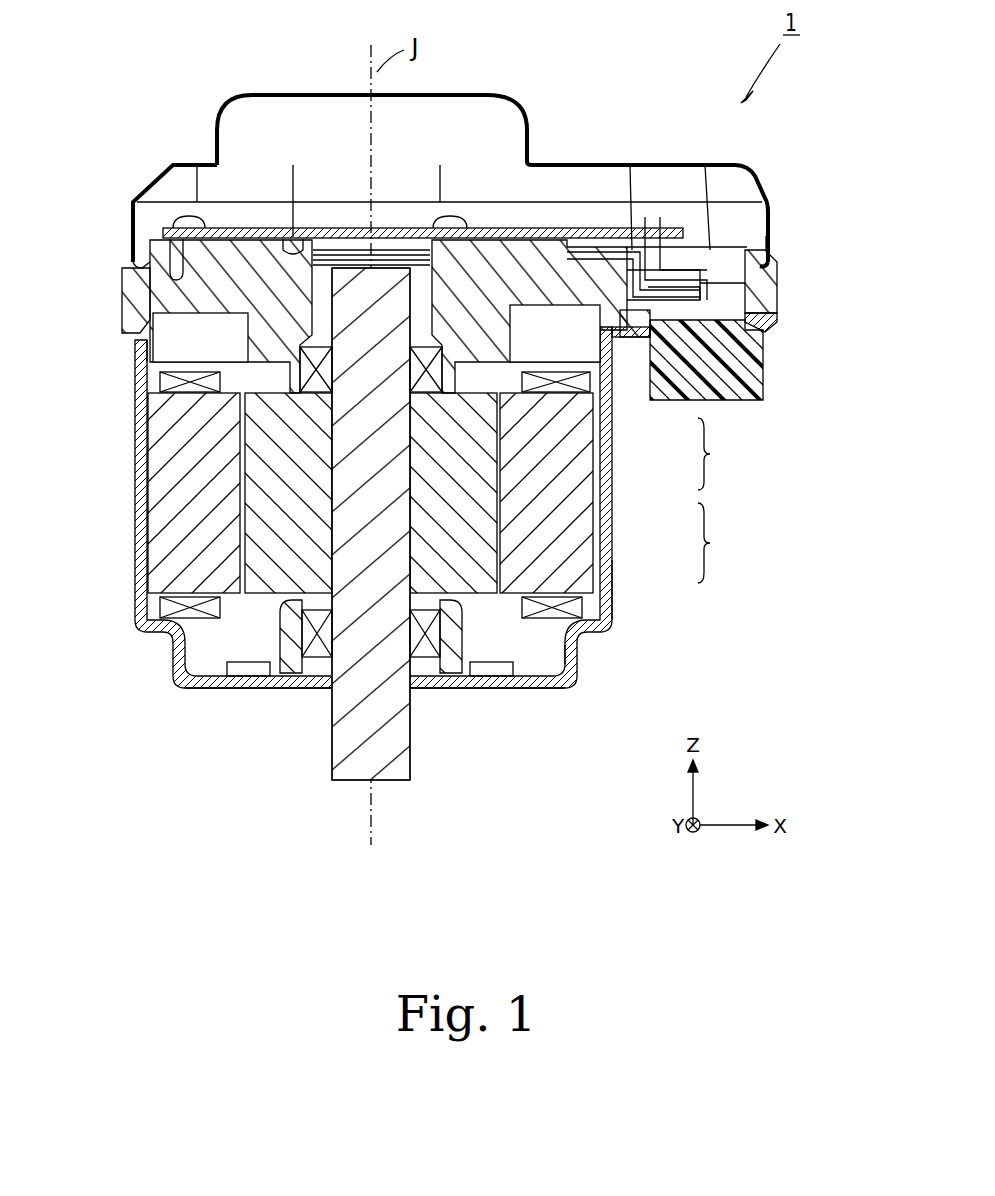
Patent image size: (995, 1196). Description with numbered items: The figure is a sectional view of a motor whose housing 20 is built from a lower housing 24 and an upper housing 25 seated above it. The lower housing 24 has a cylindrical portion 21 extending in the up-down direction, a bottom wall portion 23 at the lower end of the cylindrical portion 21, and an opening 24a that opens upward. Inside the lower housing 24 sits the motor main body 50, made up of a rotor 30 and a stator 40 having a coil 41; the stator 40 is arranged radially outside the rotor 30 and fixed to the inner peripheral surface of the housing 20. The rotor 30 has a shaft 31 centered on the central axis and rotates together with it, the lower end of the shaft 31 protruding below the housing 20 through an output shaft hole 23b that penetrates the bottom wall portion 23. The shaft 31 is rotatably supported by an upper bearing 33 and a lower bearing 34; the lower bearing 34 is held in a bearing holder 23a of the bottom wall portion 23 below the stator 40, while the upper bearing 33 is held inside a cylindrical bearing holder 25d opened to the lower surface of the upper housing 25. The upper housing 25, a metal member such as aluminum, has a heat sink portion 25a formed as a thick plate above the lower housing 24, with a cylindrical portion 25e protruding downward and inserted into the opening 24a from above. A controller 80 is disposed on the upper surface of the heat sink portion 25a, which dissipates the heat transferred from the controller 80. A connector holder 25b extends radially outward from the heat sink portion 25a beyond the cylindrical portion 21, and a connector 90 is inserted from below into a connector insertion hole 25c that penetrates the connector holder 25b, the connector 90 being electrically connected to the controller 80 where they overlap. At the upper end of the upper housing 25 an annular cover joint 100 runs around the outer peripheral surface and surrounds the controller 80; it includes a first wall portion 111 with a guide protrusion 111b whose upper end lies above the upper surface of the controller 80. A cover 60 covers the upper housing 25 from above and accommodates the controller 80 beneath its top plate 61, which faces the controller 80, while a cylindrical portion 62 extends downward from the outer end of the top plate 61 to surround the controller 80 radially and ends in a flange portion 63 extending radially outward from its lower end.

The housing 20 is at (456, 393).
The cylindrical portion 21 is at (608, 594).
The bottom wall portion 23 is at (520, 690).
The bearing holder 23a is at (245, 662).
The output shaft hole 23b is at (322, 666).
The lower housing 24 is at (376, 506).
The opening 24a is at (135, 330).
The upper housing 25 is at (456, 242).
The heat sink portion 25a is at (293, 249).
The connector holder 25b is at (770, 292).
The connector insertion hole 25c is at (766, 330).
The bearing holder 25d is at (292, 380).
The cylindrical portion 25e is at (133, 356).
The rotor 30 is at (473, 548).
The shaft 31 is at (398, 762).
The upper bearing 33 is at (318, 375).
The lower bearing 34 is at (440, 658).
The stator 40 is at (590, 516).
The coil 41 is at (576, 653).
The motor main body 50 is at (407, 527).
The cover 60 is at (594, 158).
The top plate 61 is at (440, 95).
The cylindrical portion 62 is at (772, 212).
The flange portion 63 is at (775, 265).
The controller 80 is at (213, 230).
The connector 90 is at (762, 386).
The cover joint 100 is at (775, 240).
The first wall portion 111 is at (127, 232).
The guide protrusion 111b is at (148, 243).